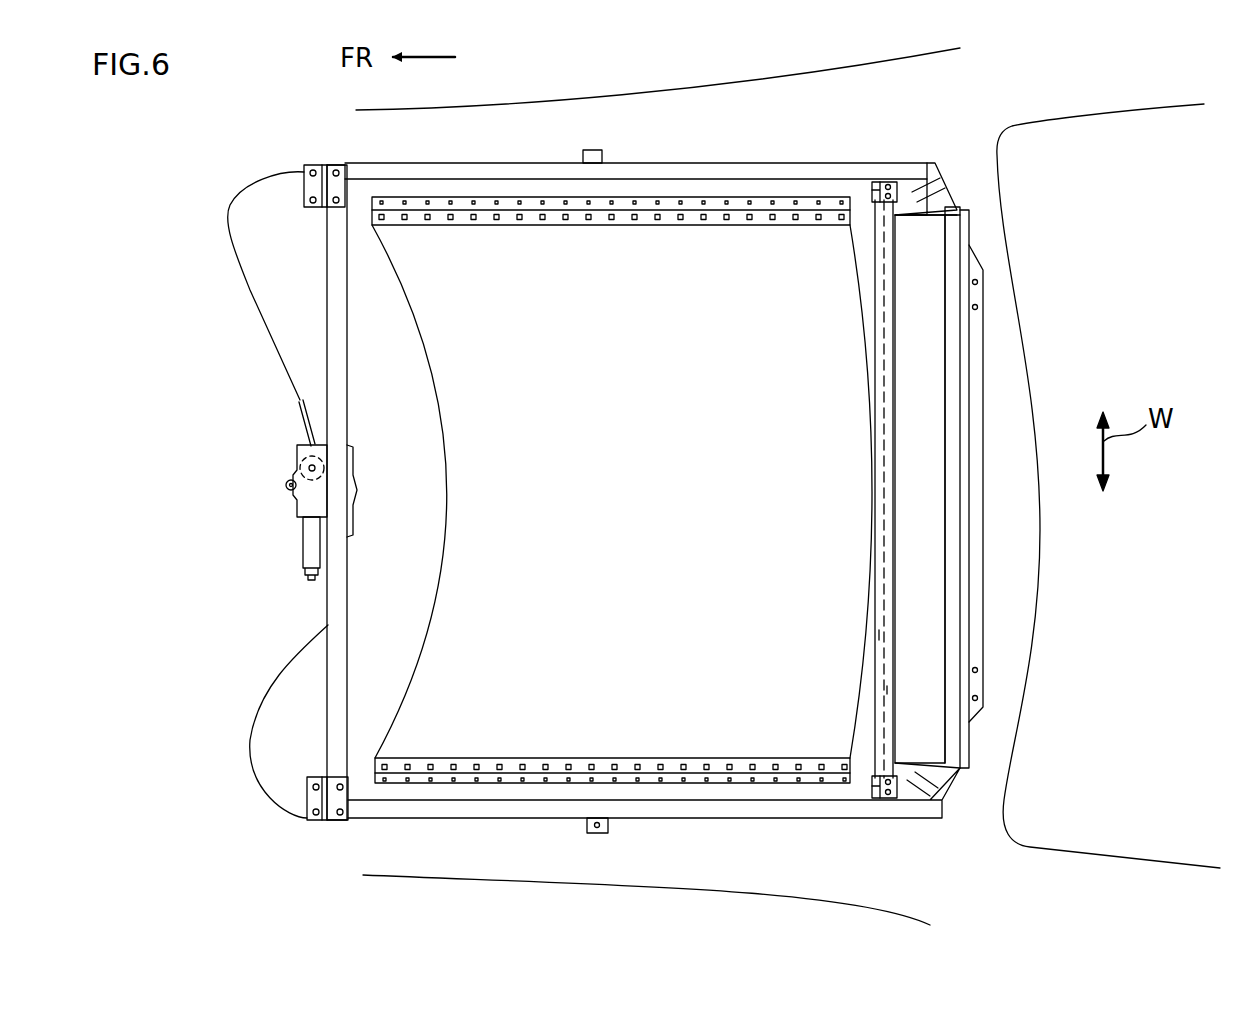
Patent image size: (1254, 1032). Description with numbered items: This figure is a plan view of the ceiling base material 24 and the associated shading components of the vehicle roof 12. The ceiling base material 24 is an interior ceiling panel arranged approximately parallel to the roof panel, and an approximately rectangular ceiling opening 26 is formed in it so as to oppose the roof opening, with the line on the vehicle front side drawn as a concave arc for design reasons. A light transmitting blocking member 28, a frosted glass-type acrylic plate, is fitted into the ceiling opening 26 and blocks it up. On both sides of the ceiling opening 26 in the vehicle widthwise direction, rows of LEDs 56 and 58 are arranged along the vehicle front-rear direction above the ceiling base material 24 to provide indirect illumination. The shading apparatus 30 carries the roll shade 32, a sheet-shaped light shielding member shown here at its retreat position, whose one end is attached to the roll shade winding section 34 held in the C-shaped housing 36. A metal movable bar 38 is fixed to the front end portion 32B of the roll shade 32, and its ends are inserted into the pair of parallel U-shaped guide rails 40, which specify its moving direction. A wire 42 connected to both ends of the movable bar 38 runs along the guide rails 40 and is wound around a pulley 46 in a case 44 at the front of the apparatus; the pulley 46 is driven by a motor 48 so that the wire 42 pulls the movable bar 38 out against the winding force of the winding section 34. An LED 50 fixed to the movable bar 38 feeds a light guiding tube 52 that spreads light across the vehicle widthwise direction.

The vehicle roof 12 is at (652, 148).
The ceiling base material 24 is at (616, 492).
The ceiling opening 26 is at (450, 566).
The blocking member 28 is at (455, 388).
The shading apparatus 30 is at (969, 357).
The roll shade 32 is at (924, 440).
The front end portion 32B is at (882, 525).
The roll shade winding section 34 is at (955, 592).
The housing 36 is at (965, 506).
The movable bar 38 is at (890, 690).
The guide rails 40 is at (790, 162).
The wire 42 is at (268, 325).
The case 44 is at (297, 460).
The pulley 46 is at (295, 452).
The motor 48 is at (300, 545).
The LED 50 is at (872, 195).
The light guiding tube 52 is at (881, 636).
The LED 56 is at (589, 220).
The LED 58 is at (543, 200).